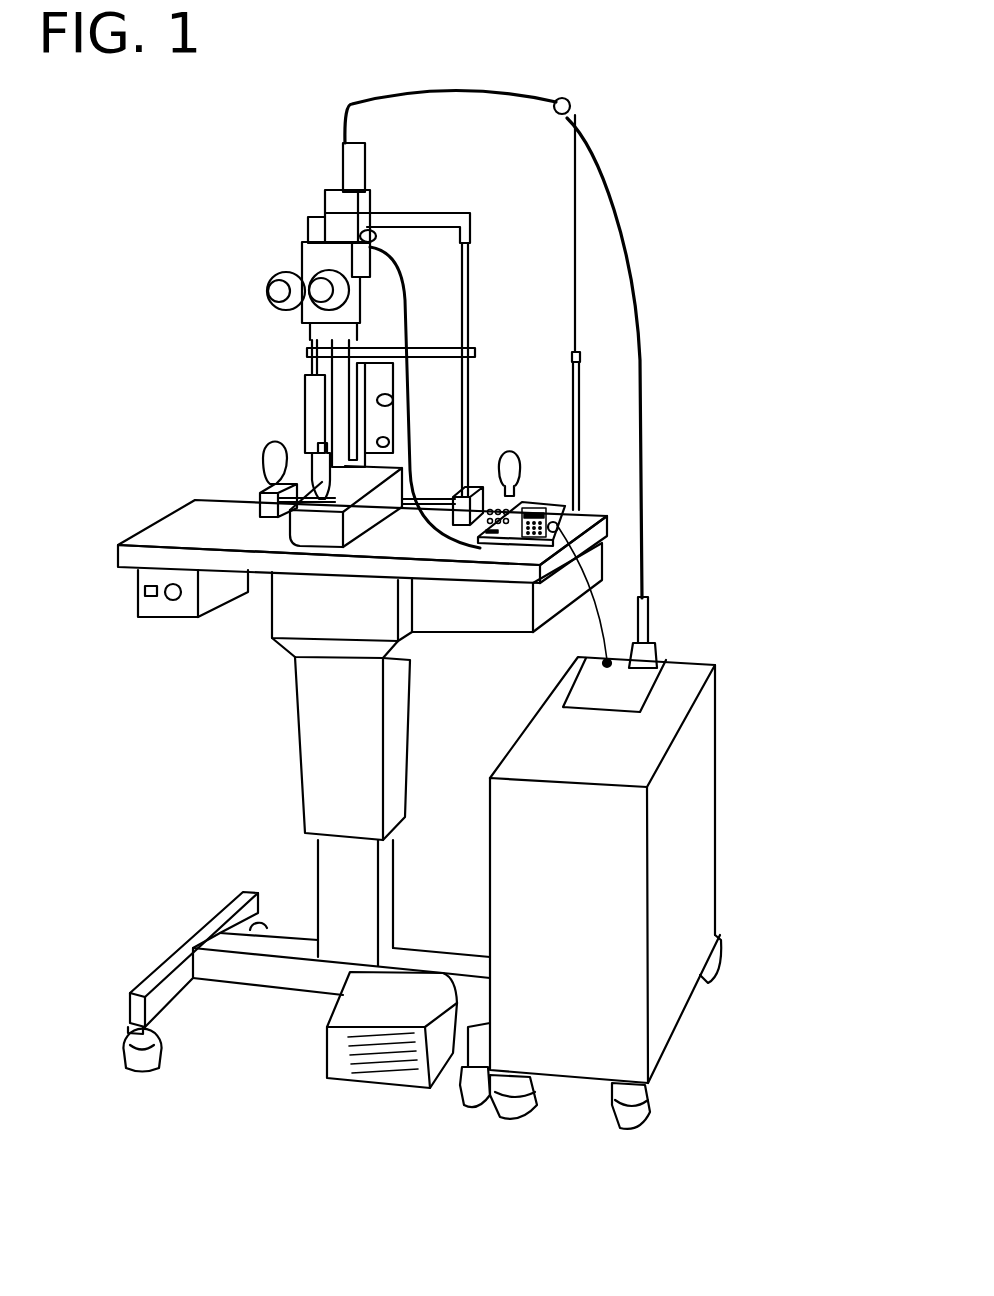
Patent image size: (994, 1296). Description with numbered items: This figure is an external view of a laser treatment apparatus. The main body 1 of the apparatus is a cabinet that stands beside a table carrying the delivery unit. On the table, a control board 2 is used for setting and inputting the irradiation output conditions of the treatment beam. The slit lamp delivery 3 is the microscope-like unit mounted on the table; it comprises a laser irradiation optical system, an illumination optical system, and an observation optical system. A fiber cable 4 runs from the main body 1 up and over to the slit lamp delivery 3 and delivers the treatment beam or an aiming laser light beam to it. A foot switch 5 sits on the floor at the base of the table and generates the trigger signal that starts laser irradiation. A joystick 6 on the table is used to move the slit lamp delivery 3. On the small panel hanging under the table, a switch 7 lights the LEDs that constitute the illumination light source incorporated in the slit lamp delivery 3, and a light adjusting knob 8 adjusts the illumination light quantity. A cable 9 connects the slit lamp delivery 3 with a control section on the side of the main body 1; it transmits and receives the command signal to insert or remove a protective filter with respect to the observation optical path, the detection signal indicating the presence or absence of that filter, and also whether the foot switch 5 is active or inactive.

The main body 1 is at (680, 807).
The control board 2 is at (557, 525).
The slit lamp delivery 3 is at (252, 353).
The fiber cable 4 is at (642, 500).
The foot switch 5 is at (377, 1070).
The joystick 6 is at (310, 462).
The switch 7 is at (138, 590).
The light adjusting knob 8 is at (172, 600).
The cable 9 is at (410, 433).